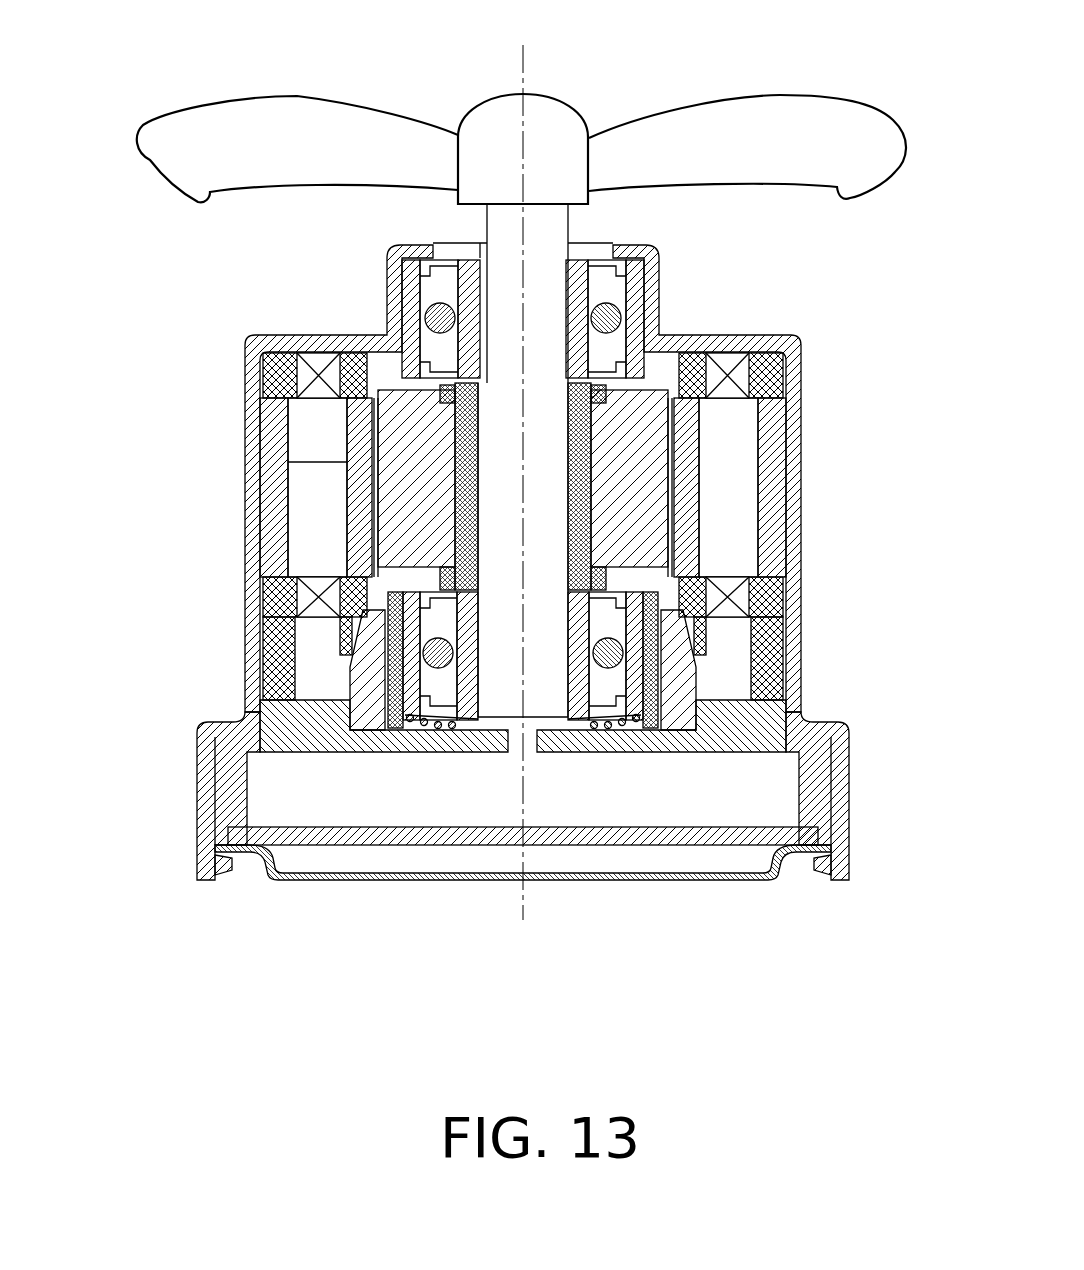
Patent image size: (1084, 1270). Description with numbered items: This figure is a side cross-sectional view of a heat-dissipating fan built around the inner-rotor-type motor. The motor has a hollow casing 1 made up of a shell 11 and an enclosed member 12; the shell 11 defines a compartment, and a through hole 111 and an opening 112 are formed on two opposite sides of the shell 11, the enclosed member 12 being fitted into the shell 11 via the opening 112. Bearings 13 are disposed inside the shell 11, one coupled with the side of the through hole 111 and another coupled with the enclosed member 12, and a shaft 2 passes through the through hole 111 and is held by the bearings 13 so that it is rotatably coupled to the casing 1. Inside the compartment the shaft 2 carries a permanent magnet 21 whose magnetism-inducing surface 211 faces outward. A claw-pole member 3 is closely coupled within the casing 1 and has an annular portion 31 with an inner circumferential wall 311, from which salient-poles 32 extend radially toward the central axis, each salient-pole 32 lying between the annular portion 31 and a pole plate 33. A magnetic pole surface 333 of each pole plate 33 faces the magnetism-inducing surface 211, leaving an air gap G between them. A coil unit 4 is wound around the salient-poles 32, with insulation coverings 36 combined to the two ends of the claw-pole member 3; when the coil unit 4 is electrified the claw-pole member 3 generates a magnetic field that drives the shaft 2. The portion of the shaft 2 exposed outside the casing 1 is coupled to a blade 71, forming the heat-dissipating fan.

The casing 1 is at (246, 337).
The shell 11 is at (535, 359).
The through hole 111 is at (453, 253).
The opening 112 is at (805, 872).
The enclosed member 12 is at (441, 897).
The bearings 13 is at (628, 297).
The shaft 2 is at (540, 233).
The permanent magnet 21 is at (312, 413).
The magnetism-inducing surface 211 is at (347, 462).
The claw-pole member 3 is at (434, 602).
The annular portion 31 is at (260, 522).
The inner circumferential wall 311 is at (272, 660).
The salient-poles 32 is at (407, 453).
The pole plates 33 is at (347, 497).
The magnetic pole surface 333 is at (250, 577).
The insulation coverings 36 is at (273, 360).
The coil unit 4 is at (317, 363).
The blade 71 is at (752, 113).
The air gap G is at (378, 426).